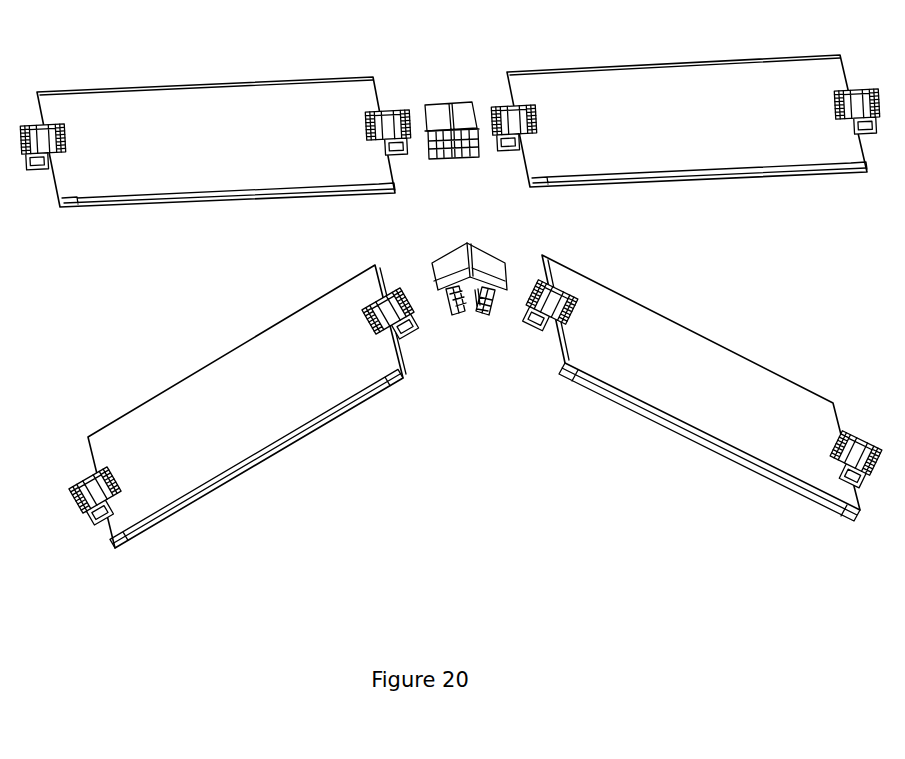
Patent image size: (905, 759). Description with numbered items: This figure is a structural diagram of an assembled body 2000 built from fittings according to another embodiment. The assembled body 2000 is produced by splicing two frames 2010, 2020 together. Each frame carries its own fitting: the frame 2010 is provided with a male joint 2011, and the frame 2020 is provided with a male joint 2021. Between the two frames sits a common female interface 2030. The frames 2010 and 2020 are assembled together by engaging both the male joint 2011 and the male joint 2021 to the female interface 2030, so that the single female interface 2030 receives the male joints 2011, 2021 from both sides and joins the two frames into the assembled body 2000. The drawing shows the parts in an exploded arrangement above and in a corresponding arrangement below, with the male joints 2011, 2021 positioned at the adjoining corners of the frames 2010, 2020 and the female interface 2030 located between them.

The assembled body 2000 is at (475, 403).
The frame 2010 is at (348, 407).
The male joint 2011 is at (403, 343).
The frame 2020 is at (635, 403).
The male joint 2021 is at (547, 338).
The female interface 2030 is at (473, 292).